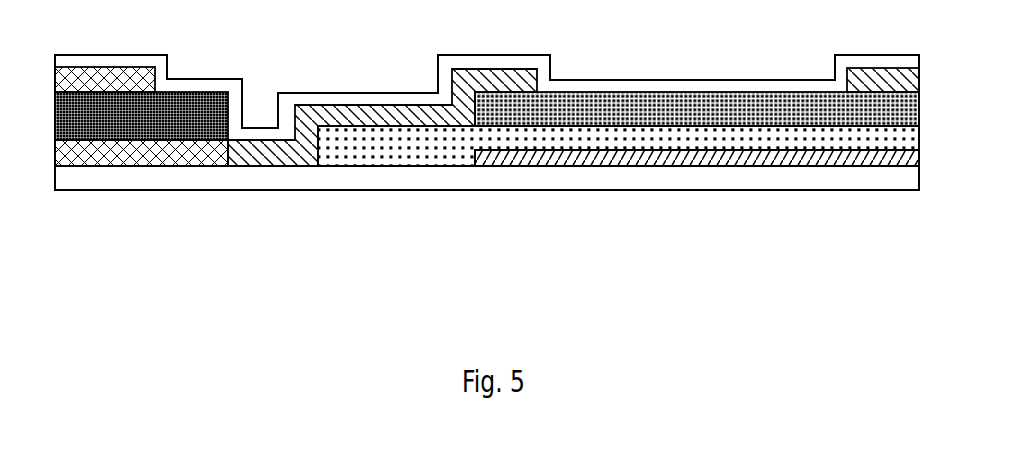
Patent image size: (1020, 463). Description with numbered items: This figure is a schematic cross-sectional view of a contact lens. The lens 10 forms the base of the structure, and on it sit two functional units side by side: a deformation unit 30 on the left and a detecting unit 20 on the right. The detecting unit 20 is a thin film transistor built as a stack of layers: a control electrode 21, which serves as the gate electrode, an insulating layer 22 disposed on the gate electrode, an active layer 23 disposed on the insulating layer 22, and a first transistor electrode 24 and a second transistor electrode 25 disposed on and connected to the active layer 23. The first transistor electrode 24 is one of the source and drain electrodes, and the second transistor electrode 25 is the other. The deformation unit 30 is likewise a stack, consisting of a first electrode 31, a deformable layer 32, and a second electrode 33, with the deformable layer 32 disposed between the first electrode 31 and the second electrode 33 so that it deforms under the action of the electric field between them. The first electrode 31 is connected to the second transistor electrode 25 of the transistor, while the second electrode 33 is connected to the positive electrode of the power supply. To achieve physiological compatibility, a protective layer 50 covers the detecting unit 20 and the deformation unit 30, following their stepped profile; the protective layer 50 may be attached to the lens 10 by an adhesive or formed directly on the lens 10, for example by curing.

The lens 10 is at (427, 185).
The detecting unit 20 is at (631, 195).
The control electrode 21 is at (560, 153).
The insulating layer 22 is at (617, 135).
The active layer 23 is at (663, 107).
The first transistor electrode 24 is at (896, 169).
The second transistor electrode 25 is at (493, 72).
The deformation unit 30 is at (148, 195).
The first electrode 31 is at (172, 145).
The deformable layer 32 is at (125, 112).
The second electrode 33 is at (74, 90).
The protective layer 50 is at (345, 100).